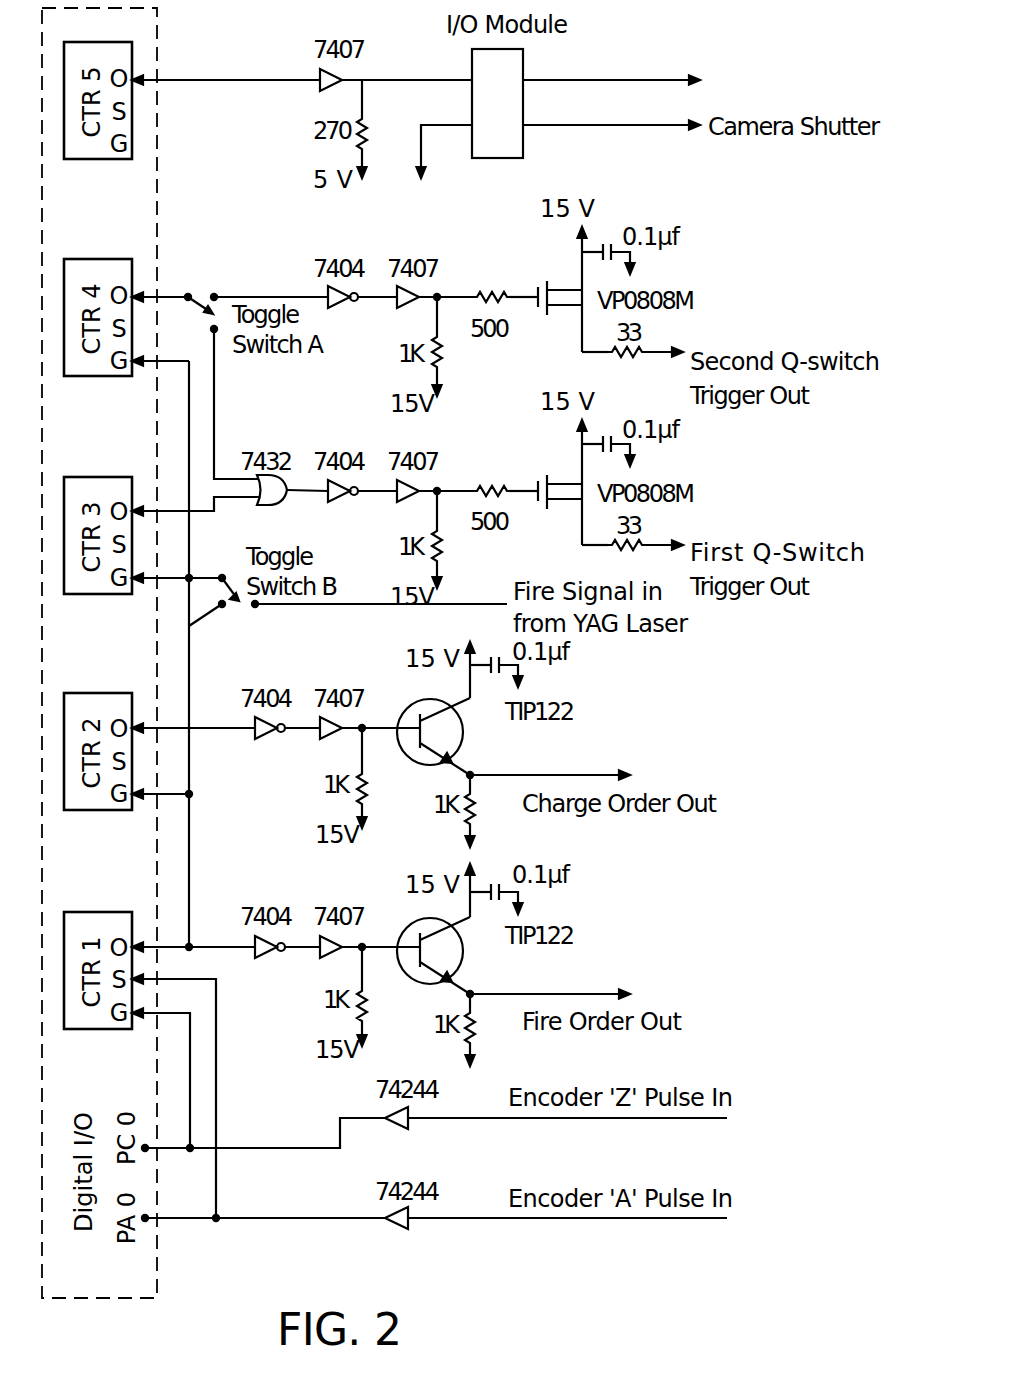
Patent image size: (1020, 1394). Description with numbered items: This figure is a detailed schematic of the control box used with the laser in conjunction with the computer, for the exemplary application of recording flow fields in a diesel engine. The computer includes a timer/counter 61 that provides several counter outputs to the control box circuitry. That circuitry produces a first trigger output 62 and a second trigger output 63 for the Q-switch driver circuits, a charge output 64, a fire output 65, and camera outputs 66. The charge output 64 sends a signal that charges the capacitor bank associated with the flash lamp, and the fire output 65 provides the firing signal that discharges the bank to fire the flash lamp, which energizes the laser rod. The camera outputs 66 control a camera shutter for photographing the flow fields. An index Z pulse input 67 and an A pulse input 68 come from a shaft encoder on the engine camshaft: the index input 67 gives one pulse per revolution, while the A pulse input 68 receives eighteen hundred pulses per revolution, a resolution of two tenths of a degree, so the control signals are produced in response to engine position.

The timer/counter 61 is at (158, 58).
The first trigger output 62 is at (662, 542).
The second trigger output 63 is at (662, 349).
The charge output 64 is at (592, 774).
The fire output 65 is at (595, 993).
The camera outputs 66 is at (625, 125).
The index Z pulse input 67 is at (617, 1118).
The A pulse input 68 is at (620, 1218).